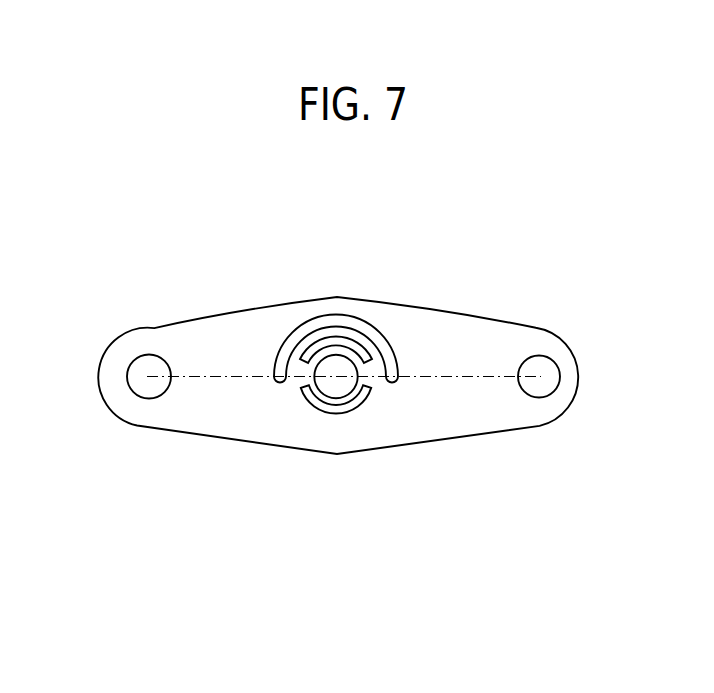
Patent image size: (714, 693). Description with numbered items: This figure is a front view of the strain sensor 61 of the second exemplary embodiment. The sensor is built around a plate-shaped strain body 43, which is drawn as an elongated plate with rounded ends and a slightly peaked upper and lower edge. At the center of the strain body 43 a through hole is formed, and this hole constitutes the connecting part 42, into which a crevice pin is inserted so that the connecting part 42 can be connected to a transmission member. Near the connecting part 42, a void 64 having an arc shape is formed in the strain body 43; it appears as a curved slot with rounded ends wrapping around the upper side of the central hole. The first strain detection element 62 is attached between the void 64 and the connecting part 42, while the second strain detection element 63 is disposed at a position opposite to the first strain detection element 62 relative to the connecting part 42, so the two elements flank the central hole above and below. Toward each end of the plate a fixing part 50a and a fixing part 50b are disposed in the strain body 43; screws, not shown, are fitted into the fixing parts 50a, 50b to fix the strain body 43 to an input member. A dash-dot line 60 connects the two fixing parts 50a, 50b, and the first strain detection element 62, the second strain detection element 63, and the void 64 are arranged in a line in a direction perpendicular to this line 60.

The strain sensor 61 is at (158, 216).
The line 60 is at (450, 380).
The strain body 43 is at (460, 347).
The connecting part 42 is at (326, 367).
The first strain detection element 62 is at (349, 349).
The second strain detection element 63 is at (349, 405).
The void 64 is at (280, 358).
The fixing part 50a is at (541, 376).
The fixing part 50b is at (147, 370).